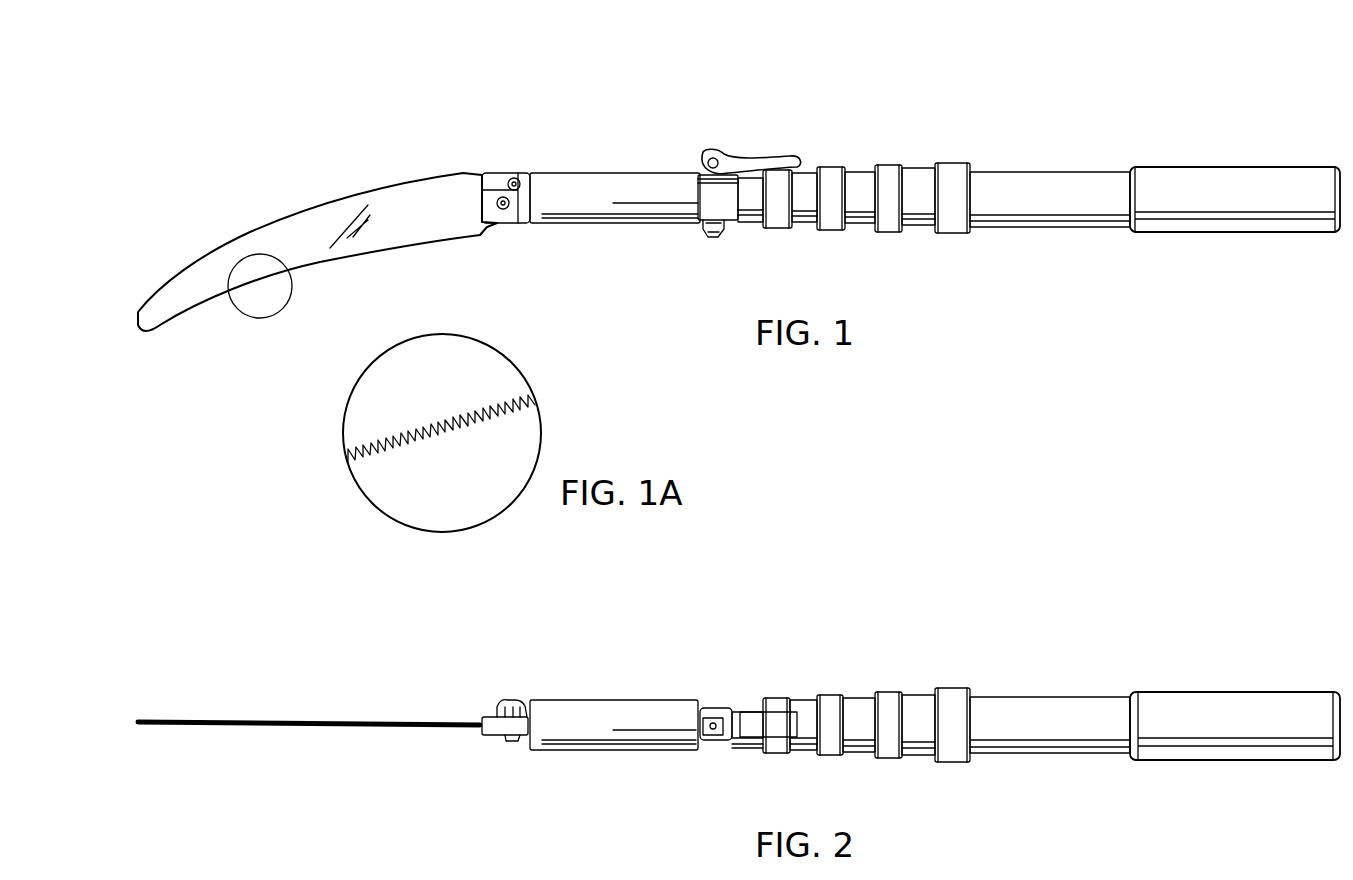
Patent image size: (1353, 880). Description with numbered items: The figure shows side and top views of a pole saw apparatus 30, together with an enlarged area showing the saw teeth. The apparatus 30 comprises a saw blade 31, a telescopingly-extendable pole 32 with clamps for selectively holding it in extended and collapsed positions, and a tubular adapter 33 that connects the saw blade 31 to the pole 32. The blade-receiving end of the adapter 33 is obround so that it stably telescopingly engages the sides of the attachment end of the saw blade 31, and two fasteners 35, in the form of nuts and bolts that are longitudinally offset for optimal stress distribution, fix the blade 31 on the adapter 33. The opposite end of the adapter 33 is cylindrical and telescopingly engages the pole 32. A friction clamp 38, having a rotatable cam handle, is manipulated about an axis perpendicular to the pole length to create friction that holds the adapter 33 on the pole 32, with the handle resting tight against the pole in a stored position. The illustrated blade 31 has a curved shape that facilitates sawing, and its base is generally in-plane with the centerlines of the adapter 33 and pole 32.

In FIG. 1, the pole saw apparatus 30 is at (1124, 82).
In FIG. 2, the pole saw apparatus 30 is at (1124, 622).
In FIG. 1, the saw blade 31 is at (290, 228).
In FIG. 2, the saw blade 31 is at (265, 720).
In FIG. 1, the telescopingly-extendable pole 32 is at (1017, 180).
In FIG. 2, the telescopingly-extendable pole 32 is at (1017, 705).
In FIG. 1, the tubular adapter 33 is at (596, 185).
In FIG. 2, the tubular adapter 33 is at (595, 710).
In FIG. 1, the fasteners 35 is at (500, 197).
In FIG. 2, the fasteners 35 is at (505, 720).
In FIG. 1, the friction clamp 38 is at (716, 156).
In FIG. 2, the friction clamp 38 is at (745, 712).